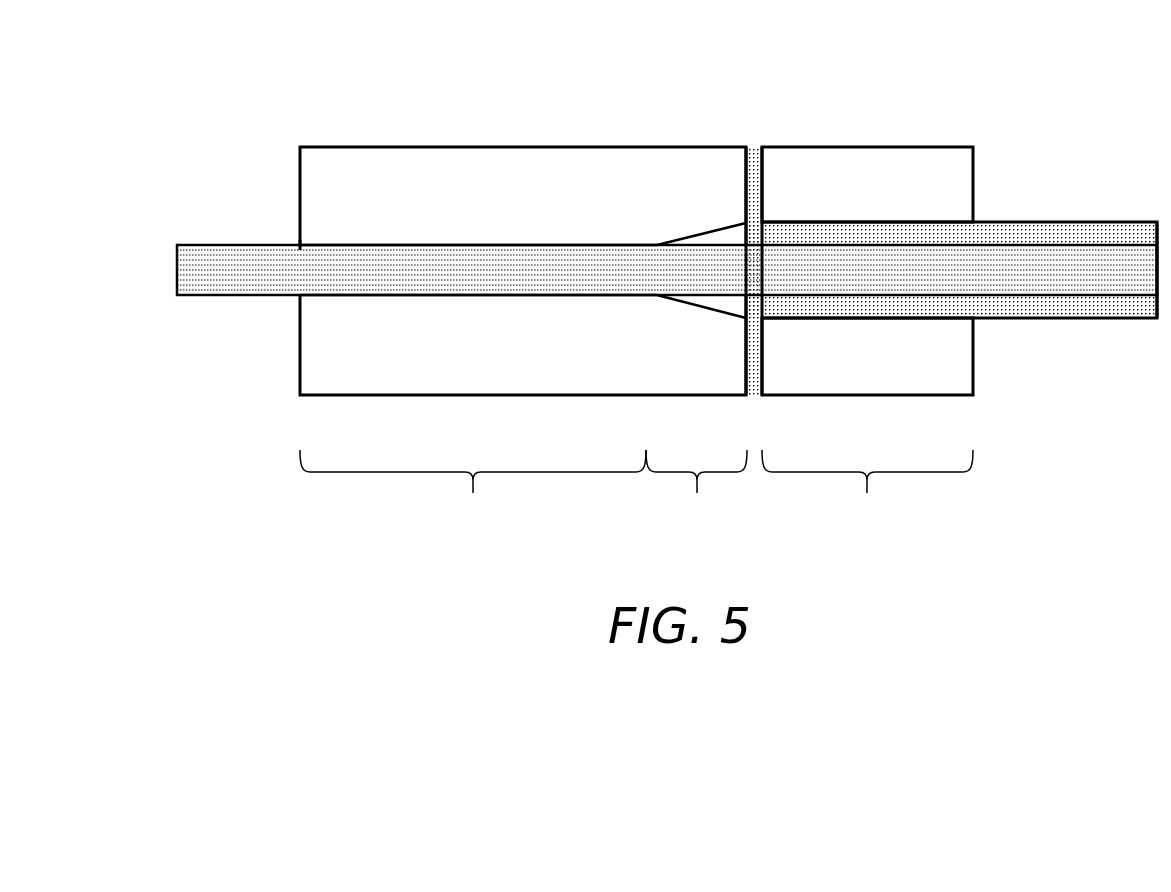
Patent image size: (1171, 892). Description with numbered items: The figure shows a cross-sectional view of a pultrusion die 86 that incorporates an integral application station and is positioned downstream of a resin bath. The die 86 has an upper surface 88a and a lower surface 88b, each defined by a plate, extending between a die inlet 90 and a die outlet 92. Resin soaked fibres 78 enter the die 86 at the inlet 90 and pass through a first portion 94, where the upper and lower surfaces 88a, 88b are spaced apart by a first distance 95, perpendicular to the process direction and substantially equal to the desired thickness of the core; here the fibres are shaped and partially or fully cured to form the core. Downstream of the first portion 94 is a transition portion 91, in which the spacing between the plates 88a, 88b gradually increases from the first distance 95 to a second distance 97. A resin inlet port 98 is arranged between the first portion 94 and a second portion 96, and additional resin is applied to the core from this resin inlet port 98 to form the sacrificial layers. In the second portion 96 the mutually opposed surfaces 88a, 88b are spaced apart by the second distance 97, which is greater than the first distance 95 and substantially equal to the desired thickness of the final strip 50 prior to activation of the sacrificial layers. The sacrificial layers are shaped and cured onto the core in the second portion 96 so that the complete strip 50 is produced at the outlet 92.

The strip 50 is at (1117, 320).
The resin soaked fibres 78 is at (233, 293).
The pultrusion die 86 is at (1053, 115).
The upper surface 88a is at (540, 223).
The lower surface 88b is at (548, 362).
The die inlet 90 is at (300, 245).
The transition portion 91 is at (696, 496).
The die outlet 92 is at (973, 318).
The first portion 94 is at (473, 496).
The first distance 95 is at (368, 343).
The second portion 96 is at (867, 496).
The second distance 97 is at (832, 368).
The resin inlet port 98 is at (753, 147).